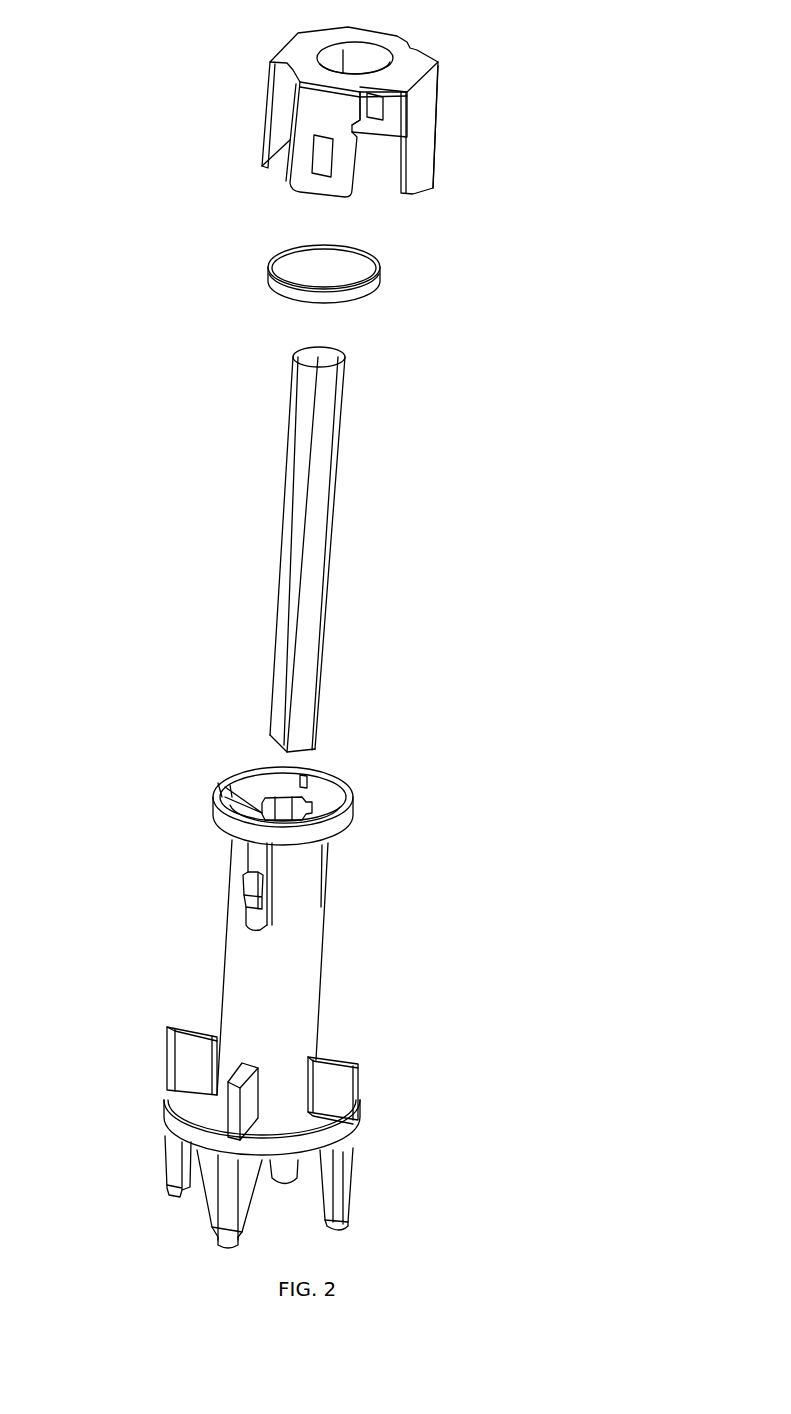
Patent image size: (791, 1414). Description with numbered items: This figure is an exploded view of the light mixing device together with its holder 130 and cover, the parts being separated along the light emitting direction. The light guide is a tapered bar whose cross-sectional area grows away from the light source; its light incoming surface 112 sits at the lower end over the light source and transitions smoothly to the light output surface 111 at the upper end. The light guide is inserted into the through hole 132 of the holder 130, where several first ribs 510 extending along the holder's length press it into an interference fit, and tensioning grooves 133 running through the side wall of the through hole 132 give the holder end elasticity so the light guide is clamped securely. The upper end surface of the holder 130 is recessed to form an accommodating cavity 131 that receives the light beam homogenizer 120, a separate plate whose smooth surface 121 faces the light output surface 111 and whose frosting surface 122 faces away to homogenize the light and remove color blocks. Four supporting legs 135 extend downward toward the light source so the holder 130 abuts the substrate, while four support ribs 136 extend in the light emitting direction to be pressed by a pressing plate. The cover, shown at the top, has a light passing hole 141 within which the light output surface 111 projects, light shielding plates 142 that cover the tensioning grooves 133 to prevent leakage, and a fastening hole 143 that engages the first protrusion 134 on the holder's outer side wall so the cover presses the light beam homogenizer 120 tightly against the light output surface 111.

The light output surface 111 is at (363, 566).
The light incoming surface 112 is at (298, 752).
The light beam homogenizer 120 is at (347, 289).
The smooth surface 121 is at (310, 303).
The frosting surface 122 is at (326, 266).
The holder 130 is at (274, 1044).
The accommodating cavity 131 is at (244, 735).
The through hole 132 is at (282, 800).
The tensioning groove 133 is at (327, 864).
The first protrusion 134 is at (243, 892).
The supporting leg 135 is at (352, 1188).
The support rib 136 is at (338, 1058).
The light passing hole 141 is at (358, 60).
The light shielding plate 142 is at (422, 140).
The fastening hole 143 is at (322, 157).
The first rib 510 is at (280, 810).